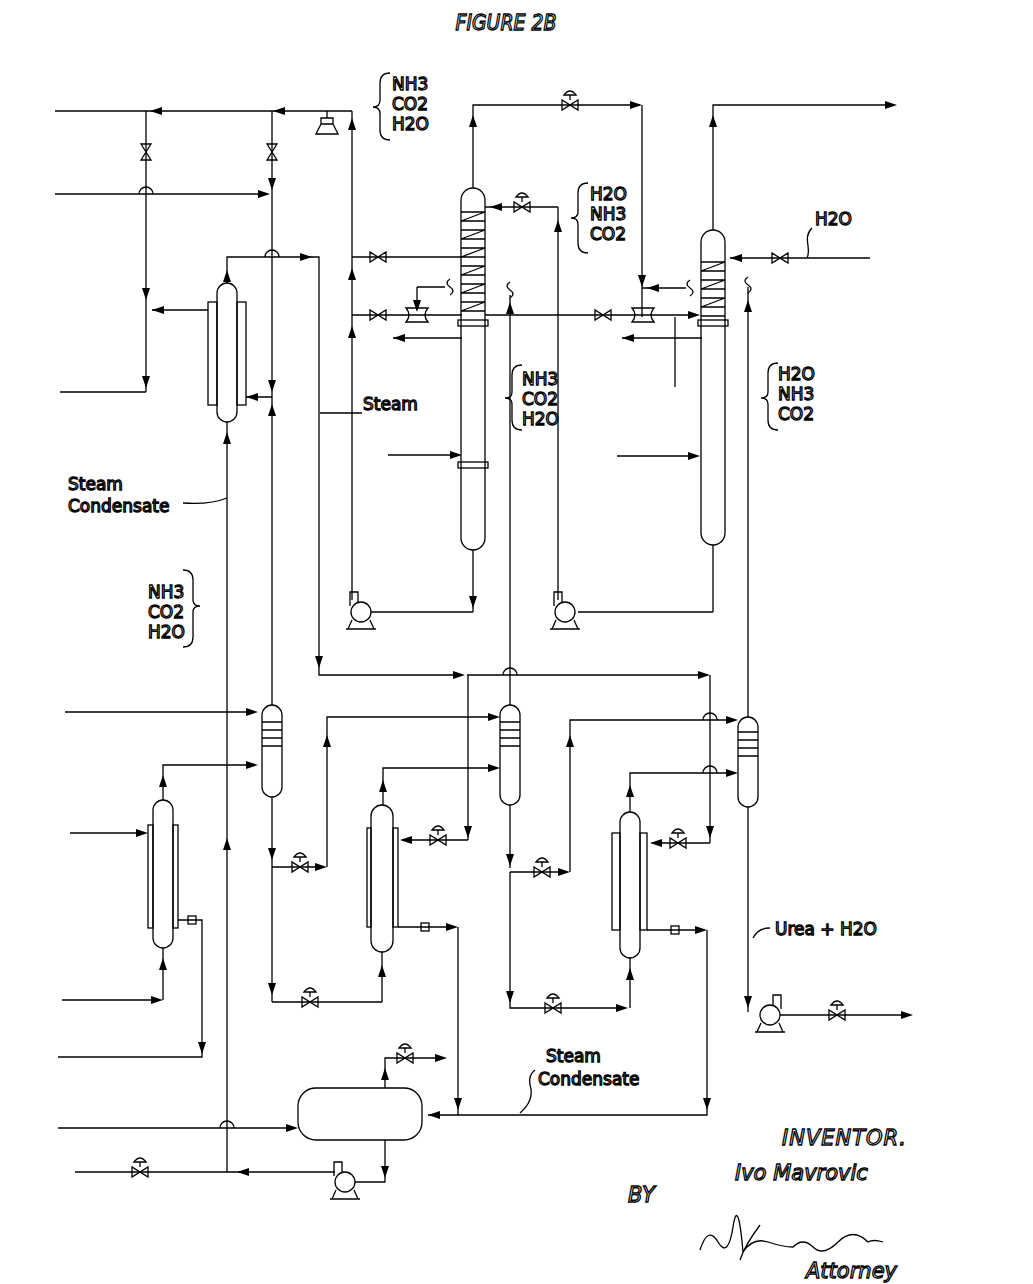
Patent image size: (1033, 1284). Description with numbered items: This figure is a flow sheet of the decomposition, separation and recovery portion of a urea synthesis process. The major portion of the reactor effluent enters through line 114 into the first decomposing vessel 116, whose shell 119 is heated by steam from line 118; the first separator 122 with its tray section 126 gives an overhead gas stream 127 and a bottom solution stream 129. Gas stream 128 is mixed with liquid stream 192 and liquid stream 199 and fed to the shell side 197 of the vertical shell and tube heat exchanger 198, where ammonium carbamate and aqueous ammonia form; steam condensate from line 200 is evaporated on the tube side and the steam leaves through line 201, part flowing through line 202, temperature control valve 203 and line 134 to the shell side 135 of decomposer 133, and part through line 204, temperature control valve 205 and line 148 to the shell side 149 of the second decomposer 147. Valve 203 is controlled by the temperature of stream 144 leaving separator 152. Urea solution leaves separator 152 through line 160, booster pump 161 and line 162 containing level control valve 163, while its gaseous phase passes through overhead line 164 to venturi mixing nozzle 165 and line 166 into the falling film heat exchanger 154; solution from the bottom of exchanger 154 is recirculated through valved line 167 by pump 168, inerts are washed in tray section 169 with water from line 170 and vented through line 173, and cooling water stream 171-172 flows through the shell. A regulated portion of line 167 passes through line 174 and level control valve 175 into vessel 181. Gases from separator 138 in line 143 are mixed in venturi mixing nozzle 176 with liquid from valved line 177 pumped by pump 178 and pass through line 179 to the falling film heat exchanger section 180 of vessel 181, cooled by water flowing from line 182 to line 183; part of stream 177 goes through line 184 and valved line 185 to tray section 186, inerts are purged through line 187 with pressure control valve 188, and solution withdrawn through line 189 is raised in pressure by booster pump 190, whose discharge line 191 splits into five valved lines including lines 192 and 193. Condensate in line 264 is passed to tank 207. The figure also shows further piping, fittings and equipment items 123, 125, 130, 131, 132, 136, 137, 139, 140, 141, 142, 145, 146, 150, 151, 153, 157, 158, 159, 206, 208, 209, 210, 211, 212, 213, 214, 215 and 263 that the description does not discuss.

The line 114 is at (147, 968).
The first decomposing vessel 116 is at (173, 805).
The line 118 is at (88, 832).
The shell 119 is at (177, 847).
The separator 122 is at (285, 757).
The feed line 123 is at (112, 712).
The separator inlet 125 is at (272, 707).
The tray section 126 is at (258, 722).
The stream 127 is at (165, 785).
The gas stream 128 is at (262, 390).
The stream 129 is at (273, 808).
The liquid line 130 is at (270, 893).
The control valve 131 is at (312, 1012).
The heat exchanger 132 is at (371, 975).
The decomposer 133 is at (367, 900).
The line 134 is at (421, 846).
The shell side 135 is at (387, 905).
The condensate line 136 is at (458, 953).
The outlet line 137 is at (384, 792).
The separator 138 is at (520, 783).
The separator inlet 139 is at (520, 738).
The liquid line 140 is at (327, 755).
The control valve 141 is at (303, 849).
The separator inlet line 142 is at (525, 712).
The line 143 is at (512, 605).
The stream 144 is at (511, 818).
The liquid line 145 is at (515, 887).
The control valve 146 is at (553, 995).
The second decomposer 147 is at (606, 885).
The line 148 is at (675, 857).
The shell side 149 is at (613, 855).
The condensate line 150 is at (667, 933).
The outlet line 151 is at (632, 793).
The separator 152 is at (760, 787).
The separator inlet 153 is at (760, 730).
The falling film heat exchanger 154 is at (700, 505).
The liquid line 157 is at (615, 733).
The control valve 158 is at (540, 855).
The separator inlet line 159 is at (750, 720).
The line 160 is at (753, 870).
The booster pump 161 is at (771, 1037).
The line 162 is at (880, 1015).
The level control valve 163 is at (837, 997).
The overhead line 164 is at (678, 262).
The venturi mixing nozzle 165 is at (640, 310).
The line 166 is at (670, 408).
The valved line 167 is at (607, 340).
The pump 168 is at (575, 628).
The tray section 169 is at (727, 278).
The line 170 is at (752, 258).
The cooling water stream 171 is at (648, 458).
The cooling water stream 172 is at (650, 345).
The line 173 is at (782, 112).
The line 174 is at (500, 268).
The level control valve 175 is at (528, 200).
The venturi mixing nozzle 176 is at (406, 310).
The valved line 177 is at (353, 392).
The pump 178 is at (375, 628).
The line 179 is at (460, 267).
The heat exchanger section 180 is at (506, 316).
The vessel 181 is at (463, 510).
The line 182 is at (410, 455).
The line 183 is at (436, 343).
The line 184 is at (352, 290).
The valved line 185 is at (362, 256).
The tray section 186 is at (478, 257).
The line 187 is at (527, 105).
The pressure control valve 188 is at (574, 90).
The line 189 is at (352, 148).
The booster pump 190 is at (330, 140).
The line 191 is at (83, 110).
The valved line 192 is at (270, 123).
The valved line 193 is at (150, 118).
The shell side 197 is at (207, 348).
The heat exchanger 198 is at (213, 420).
The liquid stream 199 is at (83, 195).
The line 200 is at (226, 530).
The line 201 is at (225, 282).
The line 202 is at (467, 738).
The temperature control valve 203 is at (438, 828).
The line 204 is at (486, 663).
The temperature control valve 205 is at (687, 850).
The steam condensate line 206 is at (452, 1117).
The tank 207 is at (375, 1127).
The control valve 208 is at (403, 1046).
The vent line 209 is at (382, 1078).
The pump 210 is at (347, 1200).
The condensate line 211 is at (298, 1177).
The condensate outlet line 212 is at (173, 1173).
The control valve 213 is at (143, 1157).
The line 214 is at (187, 313).
The line 215 is at (85, 392).
The condensate line 263 is at (130, 1043).
The line 264 is at (142, 1117).